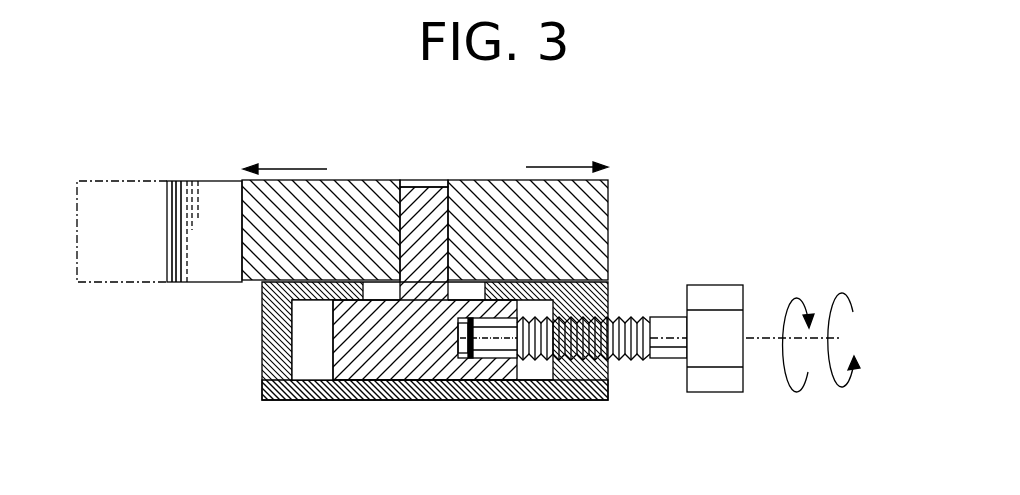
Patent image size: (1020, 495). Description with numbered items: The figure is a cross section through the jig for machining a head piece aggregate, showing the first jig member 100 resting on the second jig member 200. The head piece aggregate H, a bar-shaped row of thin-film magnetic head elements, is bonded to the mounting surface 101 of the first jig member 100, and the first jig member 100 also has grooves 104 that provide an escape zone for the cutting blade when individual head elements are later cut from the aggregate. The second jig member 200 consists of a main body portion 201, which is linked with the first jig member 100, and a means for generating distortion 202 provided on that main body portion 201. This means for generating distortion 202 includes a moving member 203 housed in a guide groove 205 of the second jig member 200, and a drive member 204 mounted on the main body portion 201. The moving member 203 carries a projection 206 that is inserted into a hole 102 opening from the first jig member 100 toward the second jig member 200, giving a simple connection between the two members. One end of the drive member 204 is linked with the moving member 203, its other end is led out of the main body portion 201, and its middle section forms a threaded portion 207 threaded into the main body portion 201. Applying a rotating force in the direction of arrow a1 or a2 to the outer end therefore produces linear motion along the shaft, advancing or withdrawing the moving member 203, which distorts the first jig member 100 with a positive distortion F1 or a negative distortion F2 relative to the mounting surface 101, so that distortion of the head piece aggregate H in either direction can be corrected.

The head piece aggregate H is at (118, 180).
The first jig member 100 is at (632, 192).
The mounting surface 101 is at (167, 243).
The hole 102 is at (420, 182).
The grooves 104 is at (198, 200).
The positive distortion F1 is at (285, 156).
The negative distortion F2 is at (567, 155).
The second jig member 200 is at (250, 401).
The main body portion 201 is at (598, 400).
The means for generating distortion 202 is at (698, 399).
The moving member 203 is at (343, 342).
The drive member 204 is at (722, 320).
The guide groove 205 is at (303, 321).
The projection 206 is at (438, 202).
The threaded portion 207 is at (628, 313).
The arrow a1 is at (800, 357).
The arrow a2 is at (846, 355).